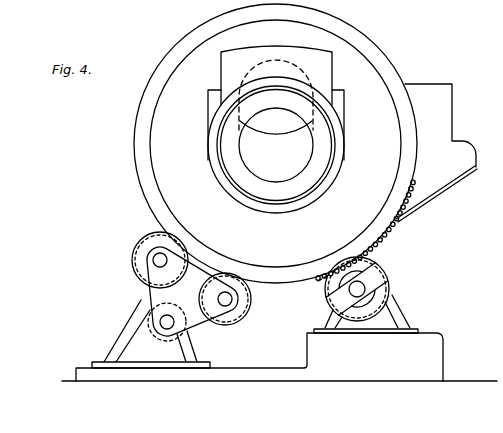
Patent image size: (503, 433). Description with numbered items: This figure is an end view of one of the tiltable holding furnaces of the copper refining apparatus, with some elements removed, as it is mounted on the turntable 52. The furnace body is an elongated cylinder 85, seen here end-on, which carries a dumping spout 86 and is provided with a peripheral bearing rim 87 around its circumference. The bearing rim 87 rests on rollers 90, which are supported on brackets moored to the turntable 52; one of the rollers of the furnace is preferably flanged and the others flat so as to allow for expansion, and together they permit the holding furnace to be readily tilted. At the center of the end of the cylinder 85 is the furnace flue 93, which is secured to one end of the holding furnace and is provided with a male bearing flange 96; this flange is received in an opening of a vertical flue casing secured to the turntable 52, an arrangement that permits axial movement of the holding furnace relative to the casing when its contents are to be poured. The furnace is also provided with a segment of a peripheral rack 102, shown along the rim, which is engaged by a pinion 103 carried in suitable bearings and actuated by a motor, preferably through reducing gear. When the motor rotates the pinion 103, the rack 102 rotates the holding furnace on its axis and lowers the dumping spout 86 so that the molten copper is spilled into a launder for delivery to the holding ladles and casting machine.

The turntable 52 is at (461, 388).
The elongated cylinder 85 is at (156, 152).
The dumping spout 86 is at (458, 171).
The peripheral bearing rim 87 is at (205, 21).
The roller 90 is at (372, 267).
The furnace flue 93 is at (276, 126).
The male bearing flange 96 is at (338, 160).
The peripheral rack 102 is at (391, 230).
The pinion 103 is at (323, 282).